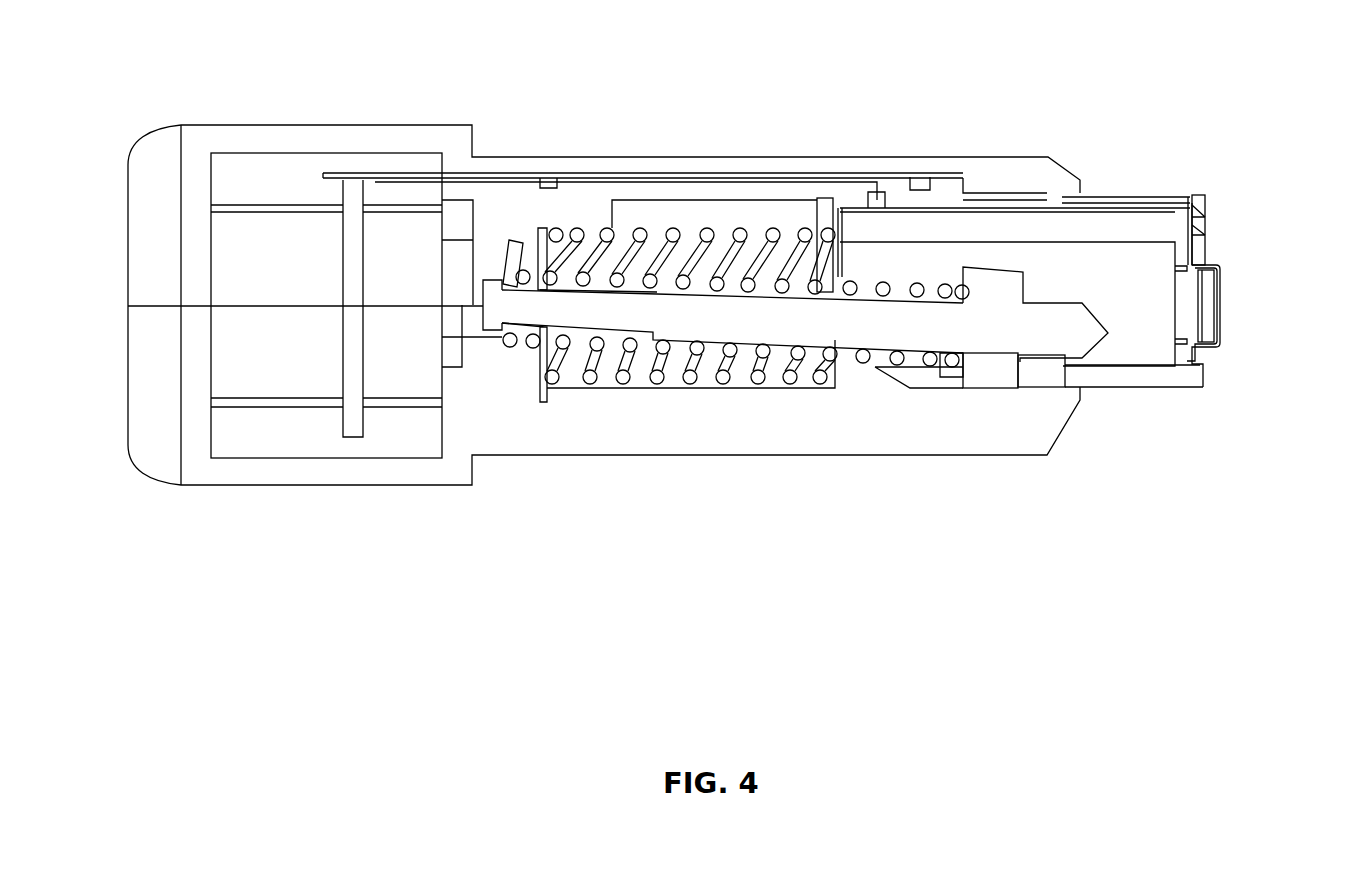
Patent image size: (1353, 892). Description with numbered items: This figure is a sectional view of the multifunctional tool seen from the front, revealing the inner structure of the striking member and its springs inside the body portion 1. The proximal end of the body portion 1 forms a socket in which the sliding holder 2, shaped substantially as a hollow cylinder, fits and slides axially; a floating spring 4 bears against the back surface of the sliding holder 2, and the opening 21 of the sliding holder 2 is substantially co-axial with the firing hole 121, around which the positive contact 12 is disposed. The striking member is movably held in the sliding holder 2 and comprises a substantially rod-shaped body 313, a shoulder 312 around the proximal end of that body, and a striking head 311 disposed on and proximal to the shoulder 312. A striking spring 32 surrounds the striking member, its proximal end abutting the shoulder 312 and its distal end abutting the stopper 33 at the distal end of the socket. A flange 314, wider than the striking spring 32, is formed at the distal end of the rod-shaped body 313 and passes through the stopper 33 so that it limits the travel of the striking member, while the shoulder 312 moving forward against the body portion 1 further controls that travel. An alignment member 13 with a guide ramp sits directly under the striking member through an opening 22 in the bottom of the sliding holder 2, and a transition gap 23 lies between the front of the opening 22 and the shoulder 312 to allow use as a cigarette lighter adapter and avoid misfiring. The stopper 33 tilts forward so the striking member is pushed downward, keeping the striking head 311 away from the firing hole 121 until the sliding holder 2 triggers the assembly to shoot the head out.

The body portion 1 is at (580, 435).
The sliding holder 2 is at (940, 225).
The floating spring 4 is at (670, 232).
The positive contact 12 is at (1215, 257).
The alignment member 13 is at (963, 380).
The opening 21 is at (1180, 283).
The opening 22 is at (1068, 388).
The transition gap 23 is at (1035, 370).
The striking spring 32 is at (883, 285).
The stopper 33 is at (517, 250).
The firing hole 121 is at (1224, 292).
The striking head 311 is at (1060, 322).
The shoulder 312 is at (988, 373).
The rod-shaped body 313 is at (768, 312).
The flange 314 is at (493, 290).